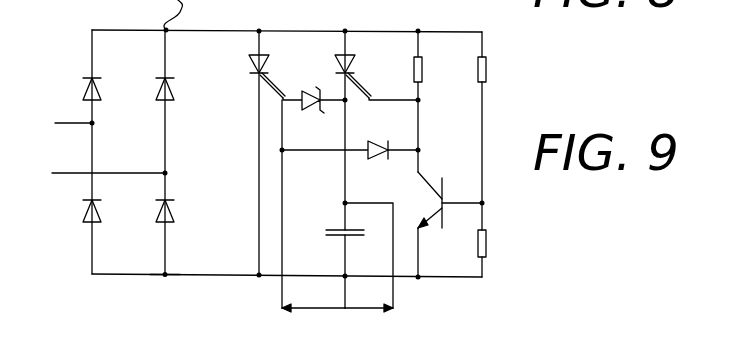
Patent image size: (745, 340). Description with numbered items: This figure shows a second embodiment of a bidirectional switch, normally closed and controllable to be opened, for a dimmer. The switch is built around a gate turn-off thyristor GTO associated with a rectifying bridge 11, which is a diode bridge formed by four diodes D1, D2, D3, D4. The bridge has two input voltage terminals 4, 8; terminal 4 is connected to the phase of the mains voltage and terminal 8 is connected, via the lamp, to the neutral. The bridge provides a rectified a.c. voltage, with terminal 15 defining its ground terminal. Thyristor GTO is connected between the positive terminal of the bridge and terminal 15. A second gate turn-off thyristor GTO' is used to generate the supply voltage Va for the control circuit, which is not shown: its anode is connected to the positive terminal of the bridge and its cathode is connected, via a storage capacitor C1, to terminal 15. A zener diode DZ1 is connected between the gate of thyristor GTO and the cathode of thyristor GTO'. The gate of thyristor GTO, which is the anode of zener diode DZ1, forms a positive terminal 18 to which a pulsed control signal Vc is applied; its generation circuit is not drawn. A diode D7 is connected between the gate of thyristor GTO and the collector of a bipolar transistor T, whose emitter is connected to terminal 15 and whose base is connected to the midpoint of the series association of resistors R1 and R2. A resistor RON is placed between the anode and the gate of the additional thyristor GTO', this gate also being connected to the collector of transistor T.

The input voltage terminal 4 is at (56, 123).
The input voltage terminal 8 is at (56, 173).
The rectifying bridge 11 is at (144, 154).
The ground terminal 15 is at (165, 277).
The positive terminal 18 is at (278, 290).
The diode D1 is at (182, 93).
The diode D2 is at (108, 217).
The diode D3 is at (108, 93).
The diode D4 is at (181, 217).
The diode D7 is at (351, 137).
The zener diode DZ1 is at (314, 91).
The gate turn-off thyristor GTO is at (242, 153).
The second gate turn-off thyristor GTO' is at (376, 169).
The resistor RON is at (444, 101).
The resistor R1 is at (499, 245).
The resistor R2 is at (499, 68).
The storage capacitor C1 is at (351, 255).
The bipolar transistor T is at (449, 226).
The pulsed control signal Vc is at (313, 319).
The supply voltage Va is at (369, 319).